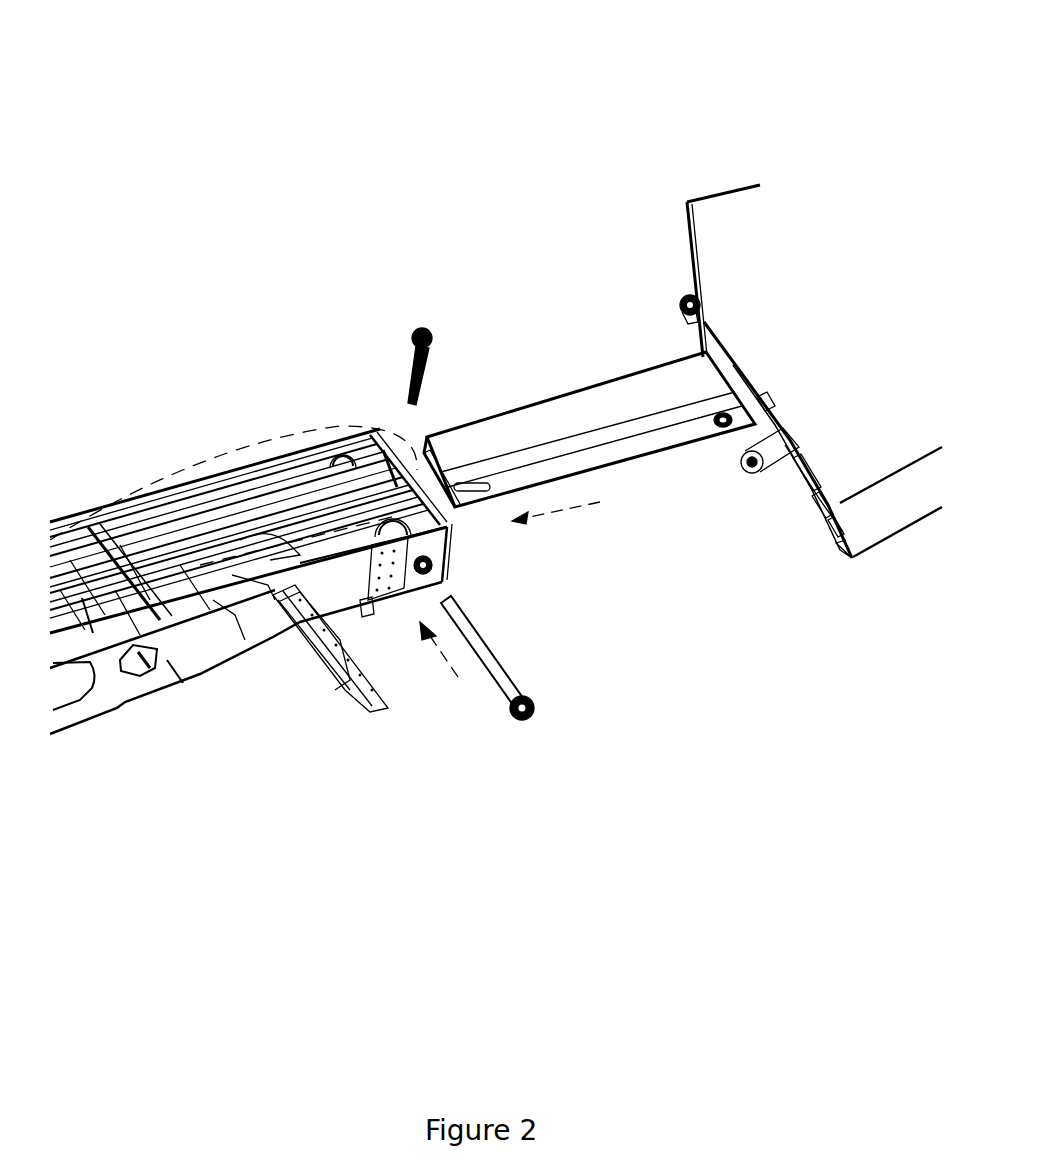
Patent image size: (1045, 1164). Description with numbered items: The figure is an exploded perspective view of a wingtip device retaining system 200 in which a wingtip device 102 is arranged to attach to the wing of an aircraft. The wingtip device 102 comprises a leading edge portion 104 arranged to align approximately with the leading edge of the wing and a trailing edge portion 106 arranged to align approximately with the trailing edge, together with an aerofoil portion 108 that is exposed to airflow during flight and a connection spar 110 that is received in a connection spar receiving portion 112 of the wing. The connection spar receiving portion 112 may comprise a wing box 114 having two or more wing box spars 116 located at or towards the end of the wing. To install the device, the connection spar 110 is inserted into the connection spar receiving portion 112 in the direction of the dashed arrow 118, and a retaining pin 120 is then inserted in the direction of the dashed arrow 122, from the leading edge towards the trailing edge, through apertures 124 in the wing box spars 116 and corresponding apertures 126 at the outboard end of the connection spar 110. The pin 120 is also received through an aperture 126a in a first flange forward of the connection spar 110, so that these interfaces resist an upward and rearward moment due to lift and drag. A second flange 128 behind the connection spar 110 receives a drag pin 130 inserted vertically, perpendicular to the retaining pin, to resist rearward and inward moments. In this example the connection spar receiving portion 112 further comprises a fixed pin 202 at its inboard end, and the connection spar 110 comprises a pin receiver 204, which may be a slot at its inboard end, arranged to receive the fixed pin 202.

The wingtip device retaining system 200 is at (285, 172).
The wingtip device 102 is at (612, 292).
The leading edge portion 104 is at (870, 530).
The trailing edge portion 106 is at (708, 190).
The aerofoil portion 108 is at (784, 270).
The connection spar 110 is at (570, 415).
The connection spar receiving portion 112 is at (227, 475).
The wing box 114 is at (265, 462).
The wing box spars 116 is at (232, 575).
The insertion direction arrow 118 is at (586, 514).
The retaining pin 120 is at (527, 693).
The pin insertion direction arrow 122 is at (445, 662).
The apertures 124 is at (408, 512).
The apertures 126 is at (712, 430).
The aperture 126a is at (737, 463).
The second flange 128 is at (684, 298).
The drag pin 130 is at (433, 332).
The fixed pin 202 is at (93, 533).
The pin receiver 204 is at (470, 528).